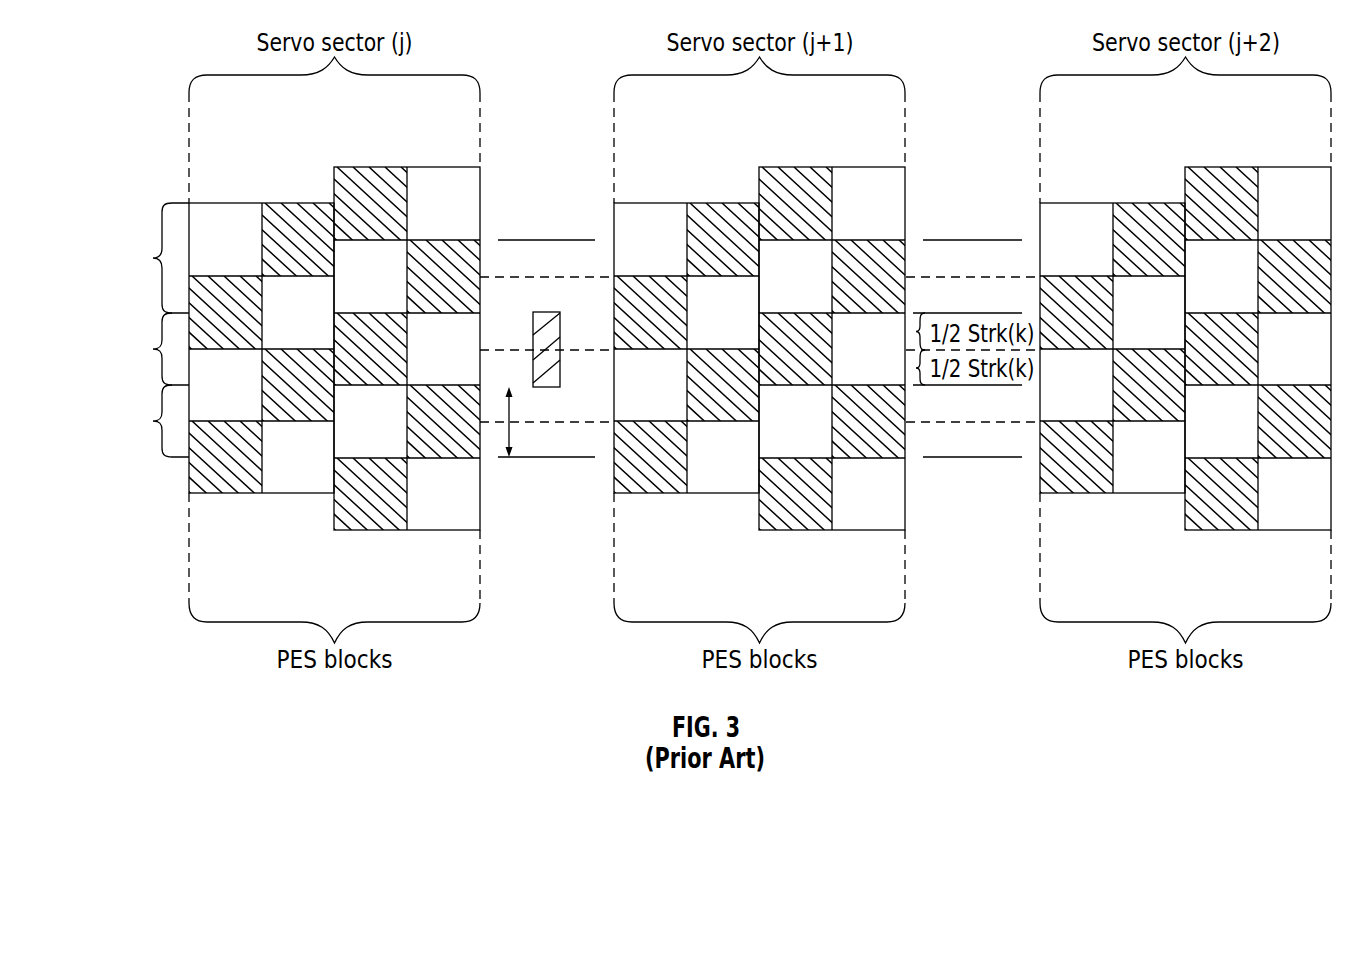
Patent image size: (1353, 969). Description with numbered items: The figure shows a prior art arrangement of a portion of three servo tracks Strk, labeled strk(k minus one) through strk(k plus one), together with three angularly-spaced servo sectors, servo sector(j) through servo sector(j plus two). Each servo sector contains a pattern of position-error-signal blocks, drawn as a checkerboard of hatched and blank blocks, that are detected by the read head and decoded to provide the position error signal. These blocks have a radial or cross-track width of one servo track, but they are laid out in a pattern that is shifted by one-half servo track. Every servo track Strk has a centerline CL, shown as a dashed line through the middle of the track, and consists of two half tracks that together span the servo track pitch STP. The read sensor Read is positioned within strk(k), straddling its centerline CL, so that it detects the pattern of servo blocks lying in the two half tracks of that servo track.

The servo track Strk is at (143, 333).
The centerline CL is at (568, 350).
The read sensor Read is at (540, 312).
The servo track pitch STP is at (511, 425).